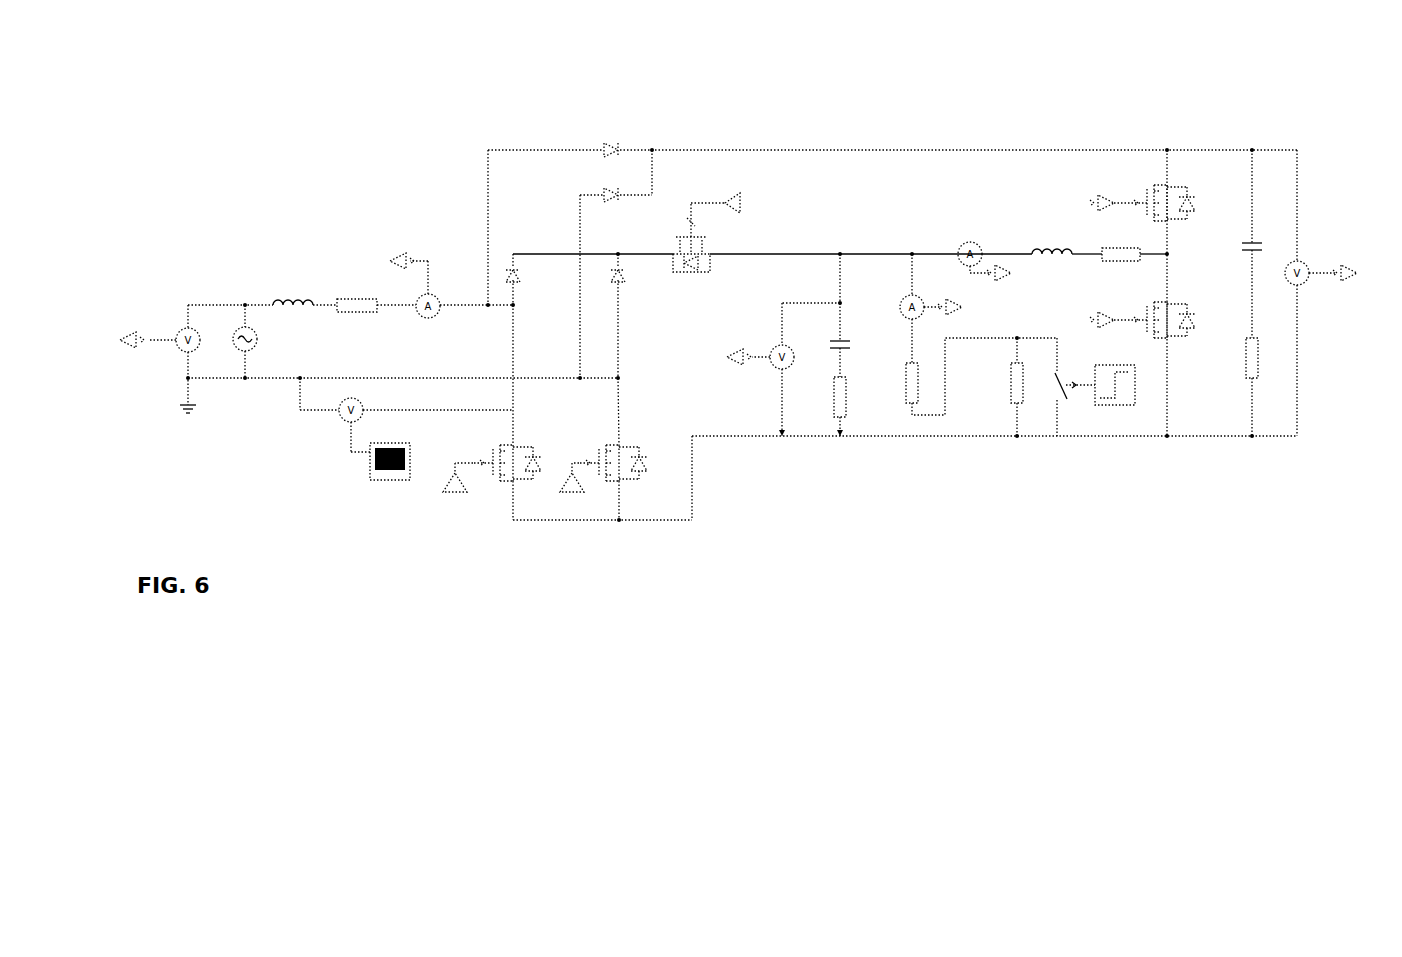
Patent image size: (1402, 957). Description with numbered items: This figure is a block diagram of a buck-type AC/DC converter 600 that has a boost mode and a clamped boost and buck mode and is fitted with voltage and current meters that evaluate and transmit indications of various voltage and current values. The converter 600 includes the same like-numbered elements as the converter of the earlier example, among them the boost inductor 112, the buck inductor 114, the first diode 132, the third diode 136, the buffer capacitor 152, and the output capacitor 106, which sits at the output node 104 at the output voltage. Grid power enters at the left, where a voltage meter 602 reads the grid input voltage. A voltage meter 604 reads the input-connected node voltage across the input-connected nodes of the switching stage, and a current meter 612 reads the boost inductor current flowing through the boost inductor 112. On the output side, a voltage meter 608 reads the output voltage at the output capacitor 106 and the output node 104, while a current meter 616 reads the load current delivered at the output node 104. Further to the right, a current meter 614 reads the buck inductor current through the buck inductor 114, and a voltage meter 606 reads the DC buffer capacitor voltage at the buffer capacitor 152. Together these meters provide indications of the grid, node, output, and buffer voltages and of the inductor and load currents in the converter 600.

The buck-type AC/DC converter 600 is at (724, 266).
The voltage meter 602 is at (160, 328).
The boost inductor 112 is at (265, 259).
The current meter 612 is at (425, 259).
The voltage meter 604 is at (394, 440).
The diode 132 is at (542, 310).
The diode 136 is at (640, 316).
The voltage meter 608 is at (753, 369).
The output capacitor 106 is at (815, 345).
The current meter 616 is at (919, 265).
The output node 104 is at (996, 374).
The current meter 614 is at (966, 221).
The buck inductor 114 is at (1024, 202).
The buffer capacitor 152 is at (1224, 176).
The voltage meter 606 is at (1309, 232).